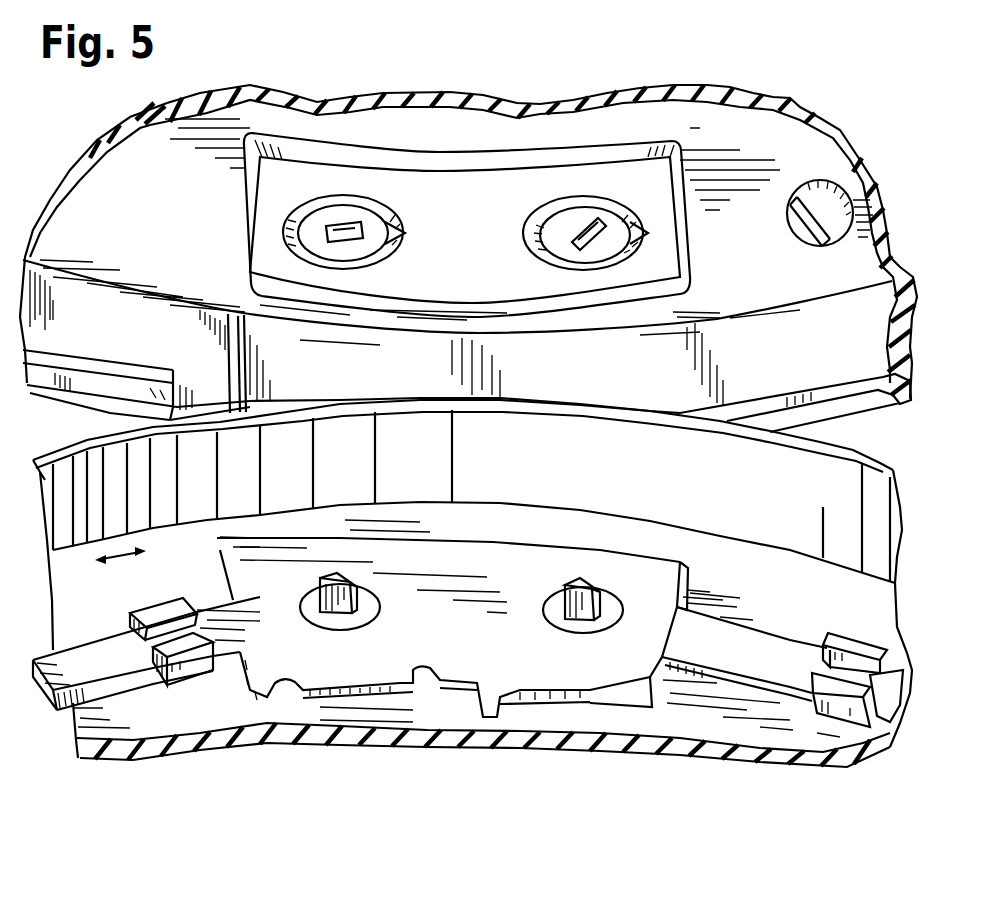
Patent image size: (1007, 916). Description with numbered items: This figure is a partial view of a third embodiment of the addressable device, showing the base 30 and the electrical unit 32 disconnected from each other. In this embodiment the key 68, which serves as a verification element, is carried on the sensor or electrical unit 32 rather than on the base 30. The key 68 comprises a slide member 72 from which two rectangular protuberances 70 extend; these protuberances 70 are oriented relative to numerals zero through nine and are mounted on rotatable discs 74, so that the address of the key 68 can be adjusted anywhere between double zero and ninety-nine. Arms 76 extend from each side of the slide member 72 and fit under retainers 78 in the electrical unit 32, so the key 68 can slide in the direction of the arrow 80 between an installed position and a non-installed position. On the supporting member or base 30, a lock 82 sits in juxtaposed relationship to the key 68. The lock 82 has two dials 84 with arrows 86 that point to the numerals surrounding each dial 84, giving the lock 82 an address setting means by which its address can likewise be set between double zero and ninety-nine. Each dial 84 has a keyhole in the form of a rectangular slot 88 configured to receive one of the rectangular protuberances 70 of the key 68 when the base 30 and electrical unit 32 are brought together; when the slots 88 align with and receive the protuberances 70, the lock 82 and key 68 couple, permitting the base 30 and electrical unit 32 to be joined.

The base 30 is at (69, 405).
The electrical unit 32 is at (138, 764).
The key 68 is at (492, 538).
The rectangular protuberances 70 is at (327, 627).
The slide member 72 is at (540, 540).
The rotatable discs 74 is at (345, 614).
The arms 76 is at (130, 690).
The retainers 78 is at (143, 603).
The arrow 80 is at (120, 566).
The lock 82 is at (440, 187).
The dials 84 is at (307, 258).
The arrows 86 is at (535, 252).
The rectangular slot 88 is at (340, 223).